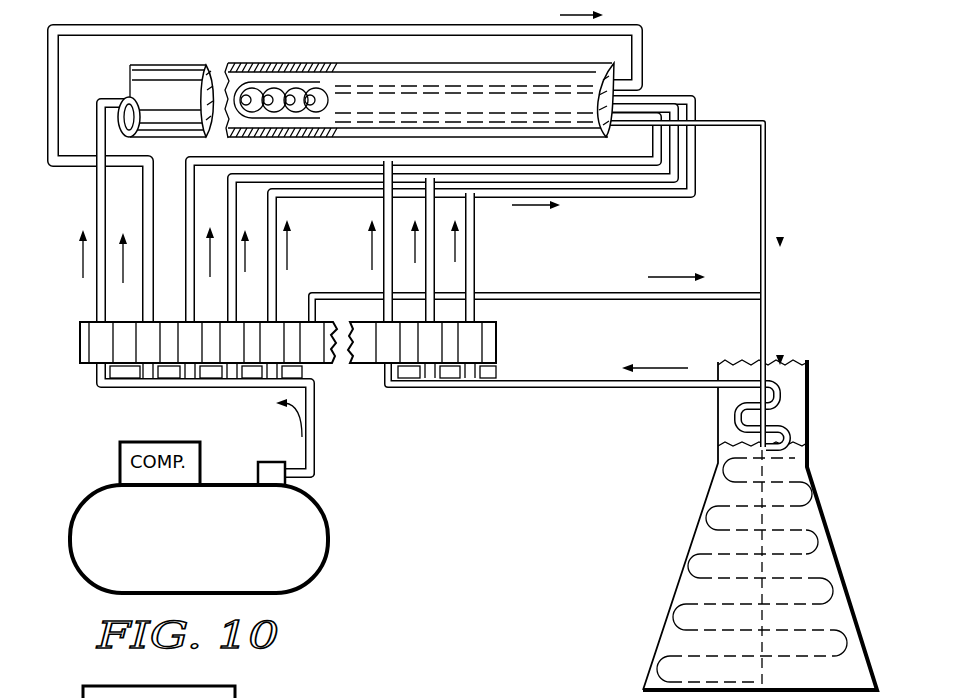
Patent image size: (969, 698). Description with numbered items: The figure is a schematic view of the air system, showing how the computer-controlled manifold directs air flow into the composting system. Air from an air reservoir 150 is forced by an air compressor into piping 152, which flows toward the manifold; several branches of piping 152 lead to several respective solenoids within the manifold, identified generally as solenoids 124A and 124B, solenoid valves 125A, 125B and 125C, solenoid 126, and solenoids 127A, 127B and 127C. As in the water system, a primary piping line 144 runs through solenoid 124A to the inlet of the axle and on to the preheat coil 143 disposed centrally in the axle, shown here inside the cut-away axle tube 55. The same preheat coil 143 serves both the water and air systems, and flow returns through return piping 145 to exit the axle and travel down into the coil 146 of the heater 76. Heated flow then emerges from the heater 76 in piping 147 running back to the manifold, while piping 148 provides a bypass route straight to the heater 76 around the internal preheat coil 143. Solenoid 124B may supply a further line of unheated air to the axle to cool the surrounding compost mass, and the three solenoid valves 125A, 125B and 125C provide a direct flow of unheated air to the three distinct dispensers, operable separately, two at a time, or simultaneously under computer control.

The tube 55 is at (400, 50).
The heater 76 is at (824, 532).
The solenoid 124A is at (145, 345).
The solenoid 124B is at (100, 343).
The solenoid valve 125A is at (185, 347).
The solenoid valve 125B is at (228, 347).
The solenoid valve 125C is at (263, 350).
The solenoid 126 is at (316, 372).
The solenoid 127A is at (392, 352).
The solenoid 127B is at (445, 352).
The valve 127C is at (497, 340).
The preheat coil 143 is at (288, 58).
The piping 144 is at (656, 40).
The return piping 145 is at (766, 164).
The coil 146 is at (780, 427).
The piping 147 is at (597, 388).
The piping 148 is at (577, 298).
The air reservoir 150 is at (323, 558).
The piping 152 is at (318, 454).